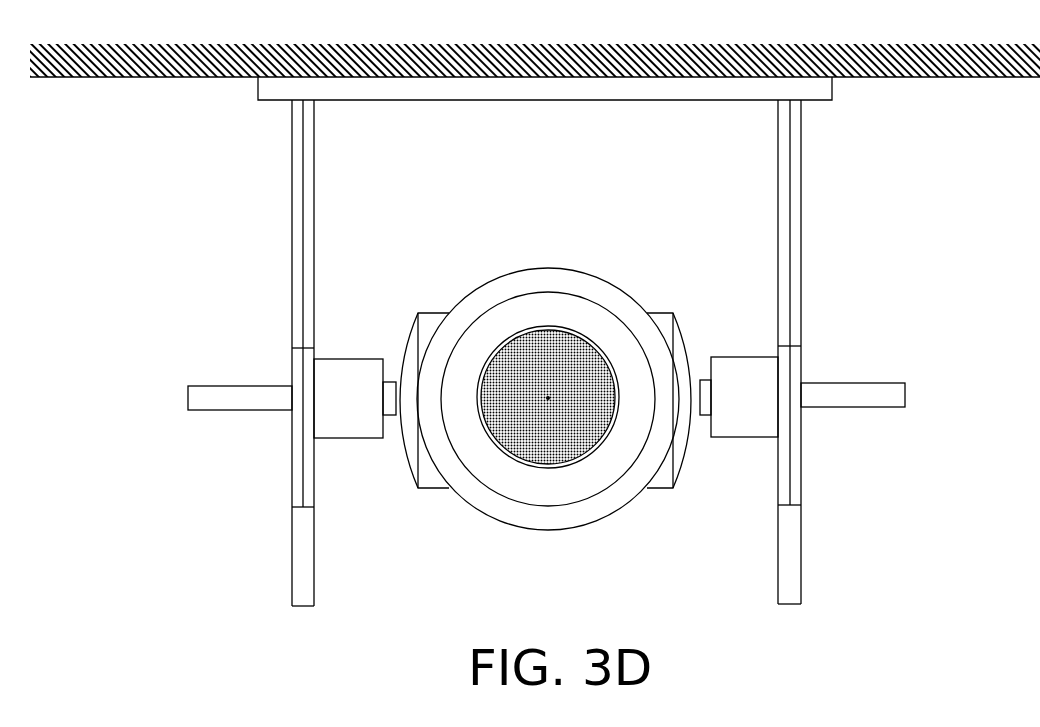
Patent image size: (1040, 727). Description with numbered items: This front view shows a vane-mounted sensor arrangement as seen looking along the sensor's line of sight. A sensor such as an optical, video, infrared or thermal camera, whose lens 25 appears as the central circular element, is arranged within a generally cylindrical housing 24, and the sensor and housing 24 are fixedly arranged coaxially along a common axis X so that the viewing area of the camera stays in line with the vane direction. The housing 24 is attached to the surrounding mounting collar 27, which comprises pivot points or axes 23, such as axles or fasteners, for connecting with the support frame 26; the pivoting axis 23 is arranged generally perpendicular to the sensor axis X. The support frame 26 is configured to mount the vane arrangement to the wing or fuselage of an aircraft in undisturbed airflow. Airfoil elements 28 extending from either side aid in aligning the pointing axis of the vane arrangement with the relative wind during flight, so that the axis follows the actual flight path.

The pivot points or axes 23 is at (707, 387).
The housing 24 is at (563, 303).
The lens 25 is at (546, 404).
The support frame 26 is at (795, 161).
The mounting collar 27 is at (615, 496).
The airfoil element 28 is at (838, 388).
The common axis X is at (540, 382).